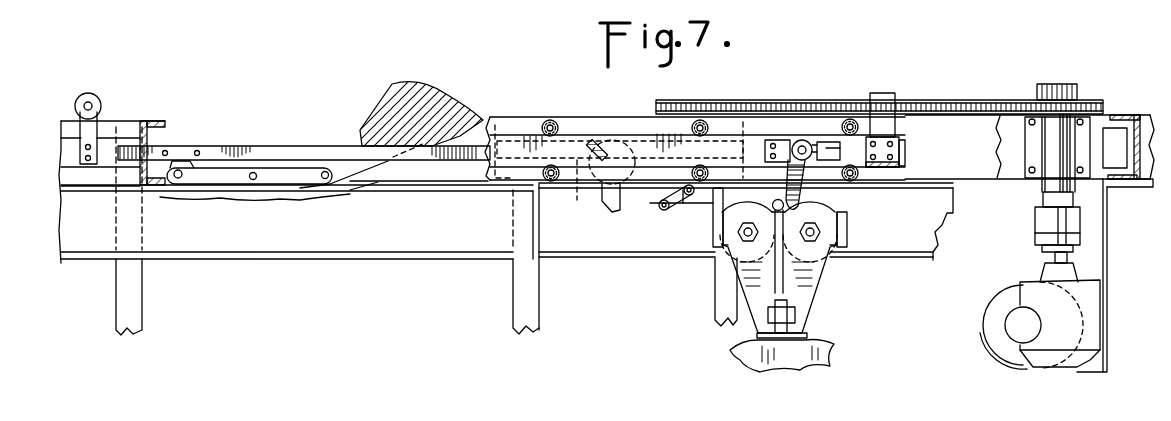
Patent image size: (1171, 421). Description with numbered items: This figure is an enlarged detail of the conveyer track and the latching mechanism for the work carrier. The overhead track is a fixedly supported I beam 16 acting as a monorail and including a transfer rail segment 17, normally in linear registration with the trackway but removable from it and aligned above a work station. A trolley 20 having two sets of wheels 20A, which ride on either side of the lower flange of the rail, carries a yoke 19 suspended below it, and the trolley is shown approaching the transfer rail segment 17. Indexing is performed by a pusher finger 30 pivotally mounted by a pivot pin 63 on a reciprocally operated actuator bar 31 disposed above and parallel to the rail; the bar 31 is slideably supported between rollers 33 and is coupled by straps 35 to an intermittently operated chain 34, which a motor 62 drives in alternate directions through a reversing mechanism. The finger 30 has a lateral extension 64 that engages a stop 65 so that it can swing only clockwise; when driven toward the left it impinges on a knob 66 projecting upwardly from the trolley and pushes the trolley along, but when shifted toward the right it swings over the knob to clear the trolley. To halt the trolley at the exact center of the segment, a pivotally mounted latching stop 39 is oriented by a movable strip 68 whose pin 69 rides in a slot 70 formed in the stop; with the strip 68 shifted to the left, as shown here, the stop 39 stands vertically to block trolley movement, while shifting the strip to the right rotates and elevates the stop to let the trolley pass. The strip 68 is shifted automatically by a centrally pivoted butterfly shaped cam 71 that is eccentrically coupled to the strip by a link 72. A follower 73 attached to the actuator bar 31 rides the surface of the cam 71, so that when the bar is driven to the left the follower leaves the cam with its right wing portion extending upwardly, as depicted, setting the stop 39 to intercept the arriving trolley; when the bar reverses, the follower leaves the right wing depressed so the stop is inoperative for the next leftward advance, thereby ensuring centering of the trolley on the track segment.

The I beam 16 is at (277, 243).
The transfer rail segment 17 is at (618, 243).
The yoke 19 is at (818, 352).
The trolley 20 is at (814, 294).
The wheels 20A is at (716, 206).
The pusher finger 30 is at (787, 160).
The actuator bar 31 is at (758, 141).
The rollers 33 is at (553, 120).
The chain 34 is at (956, 102).
The straps 35 is at (886, 95).
The latching stop 39 is at (609, 205).
The motor 62 is at (987, 327).
The pivot pin 63 is at (807, 140).
The lateral extension 64 is at (823, 162).
The stop 65 is at (833, 141).
The knob 66 is at (770, 213).
The movable strip 68 is at (348, 148).
The pin 69 is at (608, 183).
The slot 70 is at (576, 191).
The butterfly shaped cam 71 is at (254, 128).
The link 72 is at (209, 177).
The follower 73 is at (86, 97).